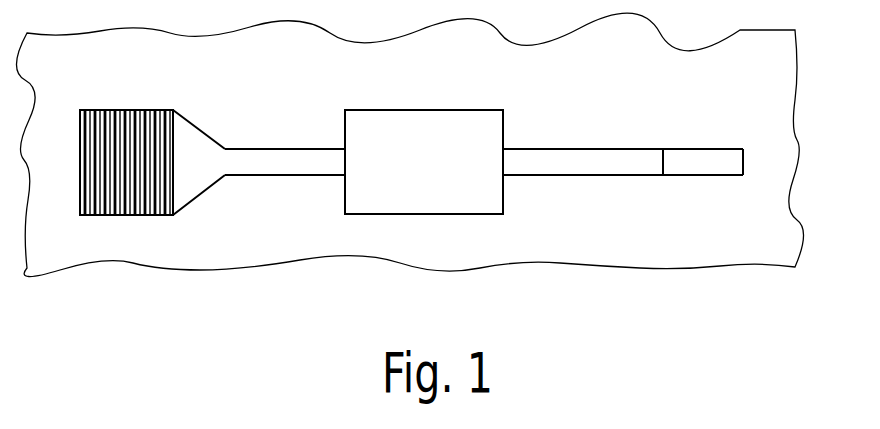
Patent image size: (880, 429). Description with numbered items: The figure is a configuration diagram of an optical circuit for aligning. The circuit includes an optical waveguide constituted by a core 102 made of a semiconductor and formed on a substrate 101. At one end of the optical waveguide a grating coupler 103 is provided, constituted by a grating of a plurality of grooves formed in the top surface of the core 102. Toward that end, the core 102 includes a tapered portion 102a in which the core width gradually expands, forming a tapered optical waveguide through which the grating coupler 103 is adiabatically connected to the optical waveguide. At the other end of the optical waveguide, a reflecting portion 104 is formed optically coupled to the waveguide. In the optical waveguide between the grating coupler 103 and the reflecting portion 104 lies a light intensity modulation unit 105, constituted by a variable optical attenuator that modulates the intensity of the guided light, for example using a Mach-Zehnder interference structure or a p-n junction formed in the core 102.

The substrate 101 is at (795, 128).
The core 102 is at (285, 149).
The tapered portion 102a is at (207, 134).
The grating coupler 103 is at (131, 110).
The reflecting portion 104 is at (703, 149).
The light intensity modulation unit 105 is at (424, 110).